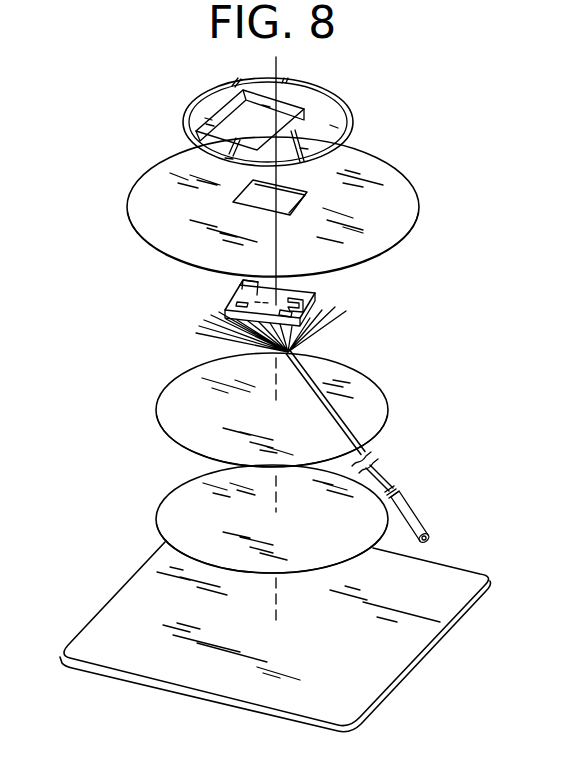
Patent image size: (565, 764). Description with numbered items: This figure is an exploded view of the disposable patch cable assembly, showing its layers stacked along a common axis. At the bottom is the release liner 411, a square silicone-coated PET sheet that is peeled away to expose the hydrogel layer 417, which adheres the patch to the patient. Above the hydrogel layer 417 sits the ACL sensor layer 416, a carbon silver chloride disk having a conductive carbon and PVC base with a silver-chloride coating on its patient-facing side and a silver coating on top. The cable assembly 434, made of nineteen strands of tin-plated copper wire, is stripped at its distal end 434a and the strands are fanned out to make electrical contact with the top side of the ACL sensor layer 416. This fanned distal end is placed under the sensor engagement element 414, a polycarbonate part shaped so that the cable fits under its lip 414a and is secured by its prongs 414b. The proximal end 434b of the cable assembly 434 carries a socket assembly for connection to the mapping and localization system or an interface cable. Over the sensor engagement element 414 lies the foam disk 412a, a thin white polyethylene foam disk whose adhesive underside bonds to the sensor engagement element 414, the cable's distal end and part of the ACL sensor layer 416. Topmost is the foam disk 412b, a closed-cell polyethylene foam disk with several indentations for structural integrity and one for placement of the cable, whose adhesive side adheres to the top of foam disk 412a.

The release liner 411 is at (197, 677).
The foam disk 412a is at (150, 186).
The foam disk 412b is at (340, 106).
The sensor engagement element 414 is at (287, 296).
The lip 414a is at (312, 281).
The prongs 414b is at (228, 301).
The ACL sensor layer 416 is at (372, 393).
The hydrogel layer 417 is at (185, 519).
The cable assembly 434 is at (345, 417).
The distal end of the cable assembly 434a is at (320, 320).
The proximal end of the cable assembly 434b is at (440, 503).